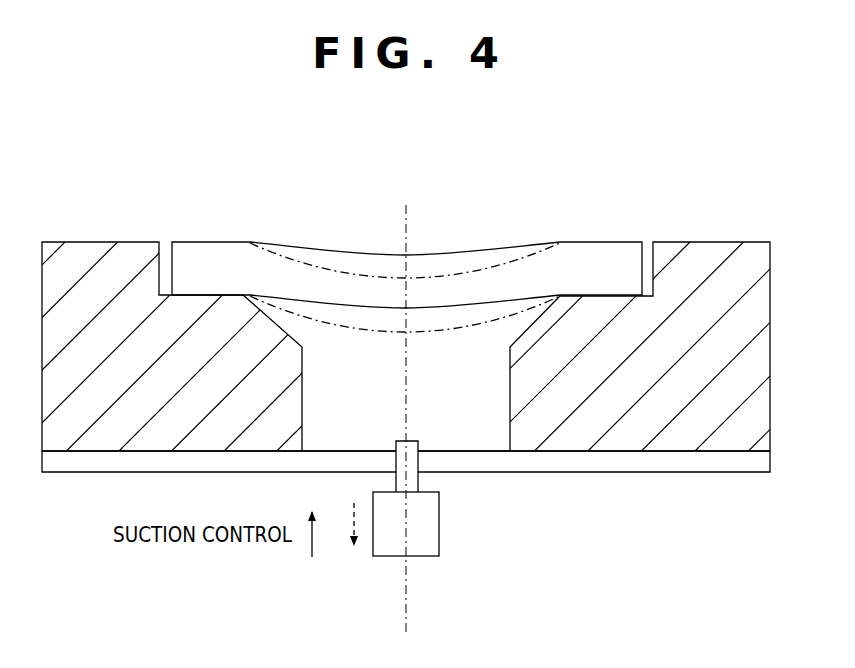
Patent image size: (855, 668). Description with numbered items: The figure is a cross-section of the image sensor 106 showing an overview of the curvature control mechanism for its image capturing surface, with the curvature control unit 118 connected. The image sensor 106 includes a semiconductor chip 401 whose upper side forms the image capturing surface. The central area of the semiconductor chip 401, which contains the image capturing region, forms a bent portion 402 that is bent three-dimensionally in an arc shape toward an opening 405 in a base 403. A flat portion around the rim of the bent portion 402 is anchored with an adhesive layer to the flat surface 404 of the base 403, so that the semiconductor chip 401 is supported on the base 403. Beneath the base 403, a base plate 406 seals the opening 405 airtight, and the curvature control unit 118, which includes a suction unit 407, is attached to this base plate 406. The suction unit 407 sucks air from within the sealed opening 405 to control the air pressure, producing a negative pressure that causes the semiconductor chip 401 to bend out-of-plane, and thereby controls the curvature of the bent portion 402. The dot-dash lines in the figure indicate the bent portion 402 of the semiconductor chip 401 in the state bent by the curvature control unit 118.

The image sensor 106 is at (708, 128).
The curvature control unit 118 is at (447, 560).
The semiconductor chip 401 is at (308, 247).
The bent portion 402 is at (340, 307).
The base 403 is at (757, 252).
The flat surface 404 is at (603, 282).
The opening 405 is at (488, 442).
The base plate 406 is at (737, 462).
The suction unit 407 is at (393, 552).